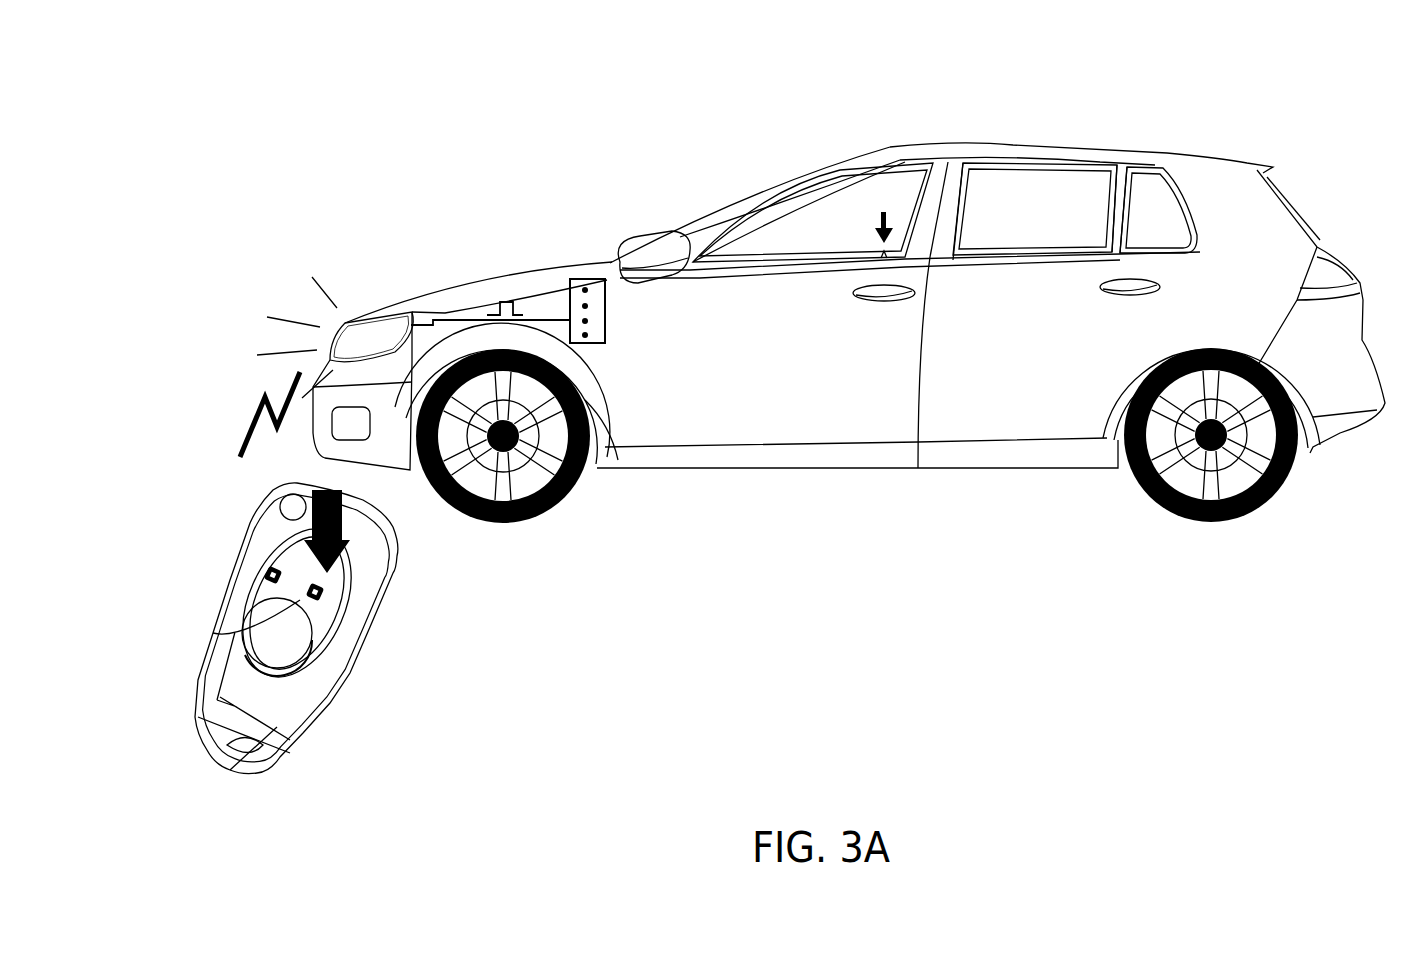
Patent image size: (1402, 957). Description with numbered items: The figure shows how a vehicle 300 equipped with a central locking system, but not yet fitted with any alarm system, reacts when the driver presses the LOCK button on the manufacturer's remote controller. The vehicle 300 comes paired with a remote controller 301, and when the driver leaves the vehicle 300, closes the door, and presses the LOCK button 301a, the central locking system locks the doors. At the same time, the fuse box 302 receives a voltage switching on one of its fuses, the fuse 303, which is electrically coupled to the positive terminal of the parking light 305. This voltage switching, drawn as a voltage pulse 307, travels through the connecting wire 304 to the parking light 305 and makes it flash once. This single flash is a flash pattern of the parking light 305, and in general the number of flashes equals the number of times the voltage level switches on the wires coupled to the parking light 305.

The vehicle 300 is at (1064, 145).
The remote controller 301 is at (248, 500).
The LOCK button 301a is at (325, 607).
The fuse box 302 is at (590, 278).
The fuse 303 is at (588, 323).
The connecting wire 304 is at (452, 318).
The parking light 305 is at (358, 338).
The voltage pulse 307 is at (514, 288).